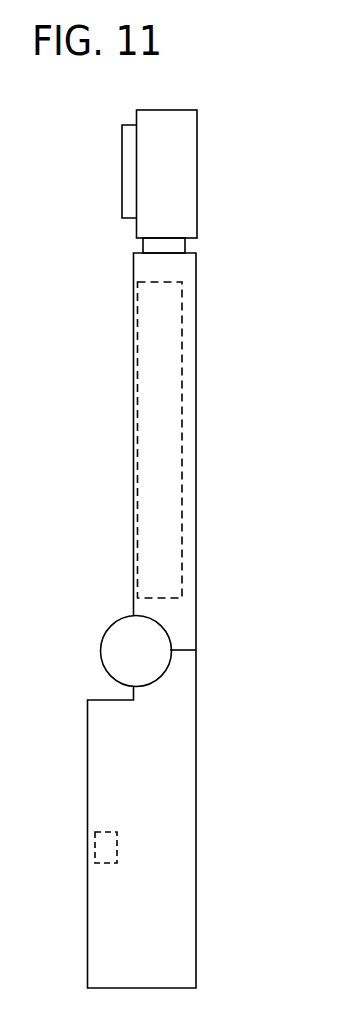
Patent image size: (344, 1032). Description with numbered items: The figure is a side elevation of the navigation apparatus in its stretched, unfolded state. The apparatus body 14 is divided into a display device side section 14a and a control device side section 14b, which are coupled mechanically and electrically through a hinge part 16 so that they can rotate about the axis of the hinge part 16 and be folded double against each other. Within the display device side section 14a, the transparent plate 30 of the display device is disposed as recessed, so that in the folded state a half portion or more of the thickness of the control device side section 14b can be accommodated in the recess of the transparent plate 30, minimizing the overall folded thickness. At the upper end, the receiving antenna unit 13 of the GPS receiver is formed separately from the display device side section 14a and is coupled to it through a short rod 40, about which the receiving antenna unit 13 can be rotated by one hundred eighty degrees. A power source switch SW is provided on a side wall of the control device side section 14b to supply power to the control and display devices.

The receiving antenna unit 13 is at (175, 183).
The short rod 40 is at (183, 246).
The apparatus body 14 is at (186, 620).
The display device side section 14a is at (195, 470).
The control device side section 14b is at (187, 842).
The transparent plate 30 is at (182, 365).
The hinge part 16 is at (115, 645).
The power source switch SW is at (87, 845).